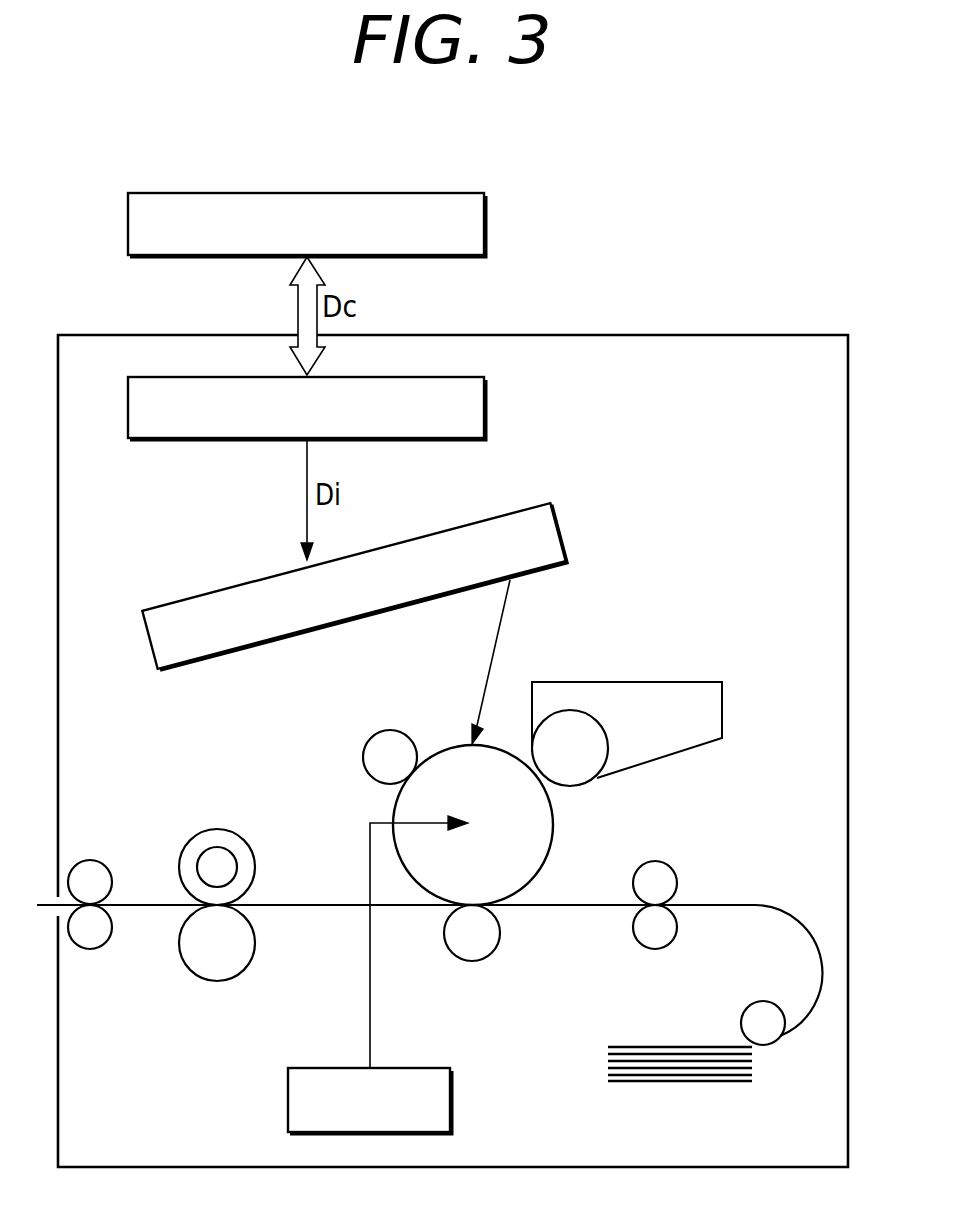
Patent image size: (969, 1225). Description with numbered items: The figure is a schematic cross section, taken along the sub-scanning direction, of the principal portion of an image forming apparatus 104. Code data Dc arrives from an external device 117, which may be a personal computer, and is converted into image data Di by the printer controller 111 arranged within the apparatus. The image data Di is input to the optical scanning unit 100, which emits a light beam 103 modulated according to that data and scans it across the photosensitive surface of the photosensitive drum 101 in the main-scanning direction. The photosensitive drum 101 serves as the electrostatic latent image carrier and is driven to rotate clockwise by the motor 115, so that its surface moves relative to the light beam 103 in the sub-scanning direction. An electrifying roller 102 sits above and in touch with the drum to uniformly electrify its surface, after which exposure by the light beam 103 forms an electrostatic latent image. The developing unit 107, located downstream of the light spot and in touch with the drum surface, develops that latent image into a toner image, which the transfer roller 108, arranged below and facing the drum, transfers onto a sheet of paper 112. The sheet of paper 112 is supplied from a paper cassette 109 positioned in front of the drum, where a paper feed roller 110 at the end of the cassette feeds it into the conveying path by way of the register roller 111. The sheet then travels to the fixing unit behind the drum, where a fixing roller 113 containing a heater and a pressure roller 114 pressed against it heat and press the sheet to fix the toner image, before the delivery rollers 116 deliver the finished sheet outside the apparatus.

The optical scanning unit 100 is at (568, 530).
The photosensitive drum 101 is at (555, 822).
The electrifying roller 102 is at (375, 732).
The light beam 103 is at (503, 612).
The image forming apparatus 104 is at (770, 334).
The developing unit 107 is at (670, 681).
The transfer roller 108 is at (488, 958).
The paper cassette 109 is at (660, 1083).
The paper feed roller 110 is at (750, 1003).
The printer controller 111 is at (487, 408).
The sheet of paper 112 is at (332, 903).
The fixing roller 113 is at (212, 830).
The pressure roller 114 is at (243, 968).
The motor 115 is at (452, 1093).
The discharge rollers 116 is at (98, 947).
The external device 117 is at (487, 215).